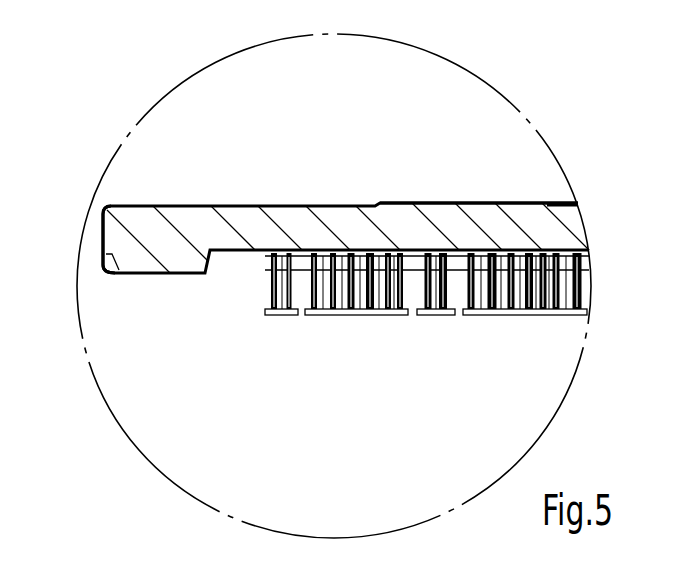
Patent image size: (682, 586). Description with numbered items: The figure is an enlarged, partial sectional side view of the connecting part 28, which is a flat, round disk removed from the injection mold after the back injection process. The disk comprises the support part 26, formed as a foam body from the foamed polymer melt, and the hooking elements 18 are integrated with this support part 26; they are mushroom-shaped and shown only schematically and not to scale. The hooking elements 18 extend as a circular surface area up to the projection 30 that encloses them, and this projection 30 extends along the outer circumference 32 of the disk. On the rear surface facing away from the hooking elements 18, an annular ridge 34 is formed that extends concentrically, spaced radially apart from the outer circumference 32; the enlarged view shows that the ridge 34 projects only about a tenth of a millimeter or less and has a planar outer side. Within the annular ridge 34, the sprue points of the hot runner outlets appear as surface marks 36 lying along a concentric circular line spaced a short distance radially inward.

The hooking elements 18 is at (365, 323).
The support part 26 is at (160, 228).
The connecting part 28 is at (32, 0).
The projection 30 is at (170, 273).
The outer circumference 32 is at (103, 237).
The annular ridge 34 is at (478, 202).
The surface marks 36 is at (560, 201).